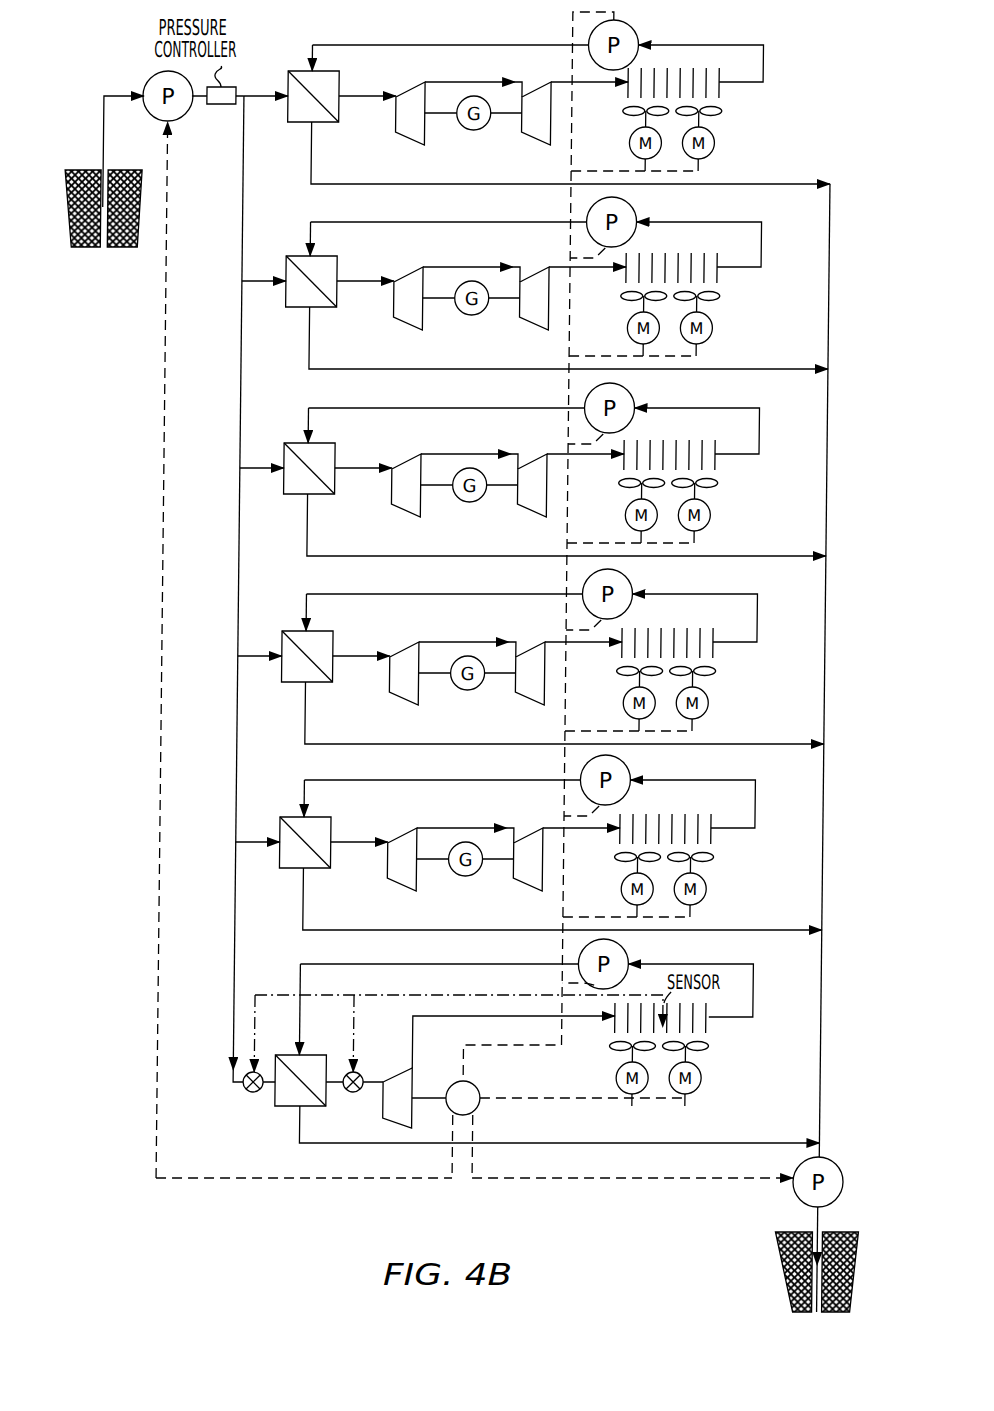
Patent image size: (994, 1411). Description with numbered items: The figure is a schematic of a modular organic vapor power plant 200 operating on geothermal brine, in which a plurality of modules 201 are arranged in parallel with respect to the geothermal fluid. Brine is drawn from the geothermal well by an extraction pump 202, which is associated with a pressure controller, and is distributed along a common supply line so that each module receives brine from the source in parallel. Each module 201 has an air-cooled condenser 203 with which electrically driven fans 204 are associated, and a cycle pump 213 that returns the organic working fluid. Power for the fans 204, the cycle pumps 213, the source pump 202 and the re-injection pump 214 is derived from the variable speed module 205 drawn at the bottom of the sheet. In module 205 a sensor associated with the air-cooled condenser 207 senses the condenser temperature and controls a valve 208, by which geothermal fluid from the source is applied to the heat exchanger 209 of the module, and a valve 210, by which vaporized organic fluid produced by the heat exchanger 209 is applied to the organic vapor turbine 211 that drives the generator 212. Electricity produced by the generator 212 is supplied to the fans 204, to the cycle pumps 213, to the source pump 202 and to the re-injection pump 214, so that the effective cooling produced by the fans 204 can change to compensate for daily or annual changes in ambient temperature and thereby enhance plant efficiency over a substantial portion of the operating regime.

The power plant 200 is at (305, 37).
The modules 201 is at (532, 553).
The extraction pump 202 is at (154, 80).
The air-cooled condenser 203 is at (720, 78).
The electrically driven fans 204 is at (717, 144).
The module 205 is at (522, 1162).
The air-cooled condenser 207 is at (716, 1031).
The valve 208 is at (258, 1090).
The heat exchanger 209 is at (312, 1054).
The valve 210 is at (365, 1092).
The organic vapor turbine 211 is at (426, 1067).
The generator 212 is at (487, 1086).
The cycle pumps 213 is at (631, 206).
The re-injection pump 214 is at (813, 1202).